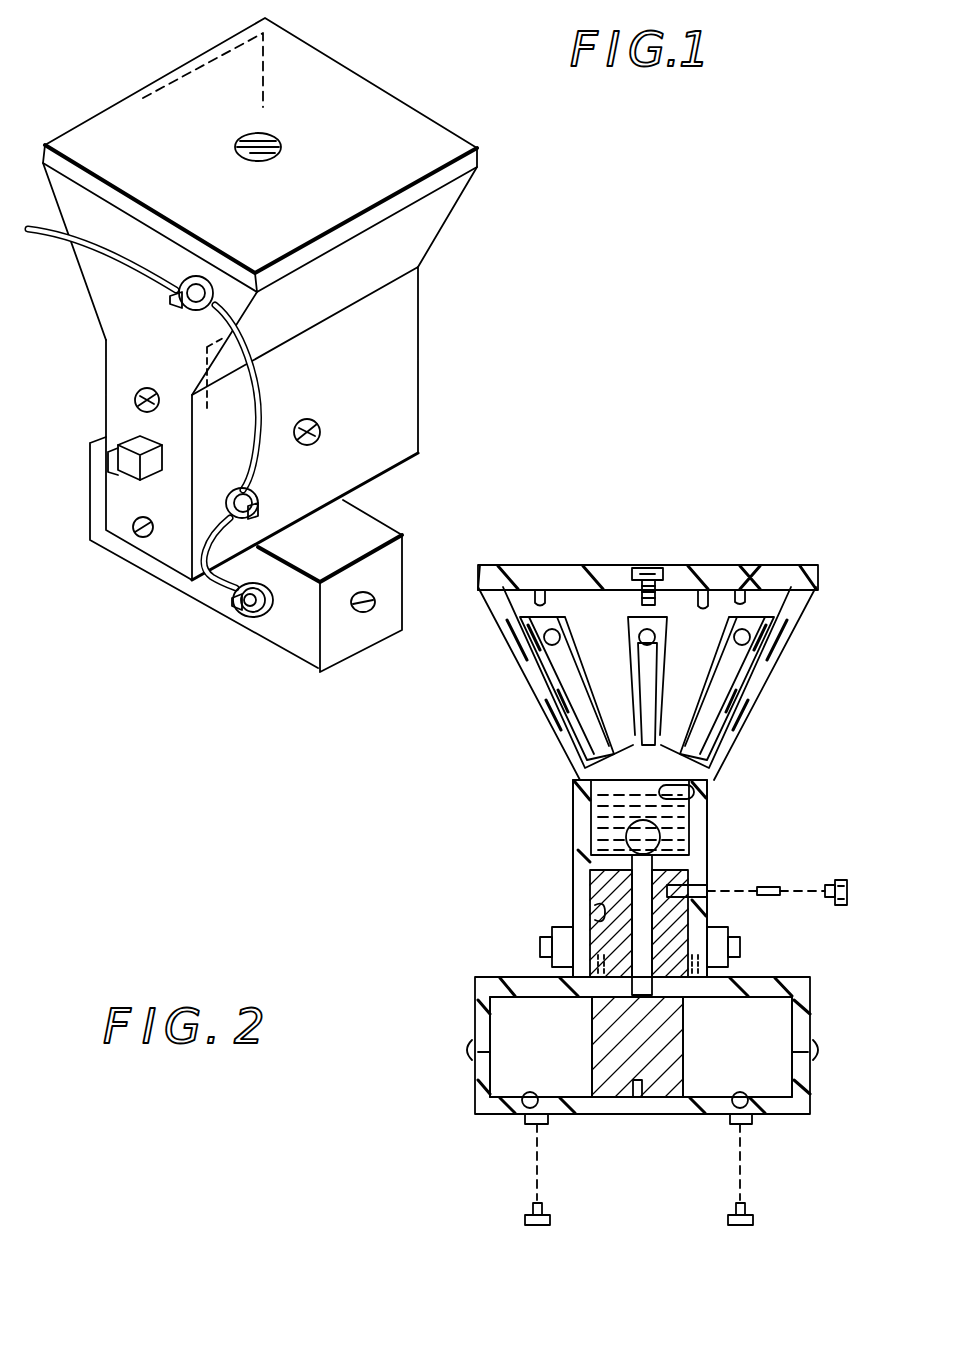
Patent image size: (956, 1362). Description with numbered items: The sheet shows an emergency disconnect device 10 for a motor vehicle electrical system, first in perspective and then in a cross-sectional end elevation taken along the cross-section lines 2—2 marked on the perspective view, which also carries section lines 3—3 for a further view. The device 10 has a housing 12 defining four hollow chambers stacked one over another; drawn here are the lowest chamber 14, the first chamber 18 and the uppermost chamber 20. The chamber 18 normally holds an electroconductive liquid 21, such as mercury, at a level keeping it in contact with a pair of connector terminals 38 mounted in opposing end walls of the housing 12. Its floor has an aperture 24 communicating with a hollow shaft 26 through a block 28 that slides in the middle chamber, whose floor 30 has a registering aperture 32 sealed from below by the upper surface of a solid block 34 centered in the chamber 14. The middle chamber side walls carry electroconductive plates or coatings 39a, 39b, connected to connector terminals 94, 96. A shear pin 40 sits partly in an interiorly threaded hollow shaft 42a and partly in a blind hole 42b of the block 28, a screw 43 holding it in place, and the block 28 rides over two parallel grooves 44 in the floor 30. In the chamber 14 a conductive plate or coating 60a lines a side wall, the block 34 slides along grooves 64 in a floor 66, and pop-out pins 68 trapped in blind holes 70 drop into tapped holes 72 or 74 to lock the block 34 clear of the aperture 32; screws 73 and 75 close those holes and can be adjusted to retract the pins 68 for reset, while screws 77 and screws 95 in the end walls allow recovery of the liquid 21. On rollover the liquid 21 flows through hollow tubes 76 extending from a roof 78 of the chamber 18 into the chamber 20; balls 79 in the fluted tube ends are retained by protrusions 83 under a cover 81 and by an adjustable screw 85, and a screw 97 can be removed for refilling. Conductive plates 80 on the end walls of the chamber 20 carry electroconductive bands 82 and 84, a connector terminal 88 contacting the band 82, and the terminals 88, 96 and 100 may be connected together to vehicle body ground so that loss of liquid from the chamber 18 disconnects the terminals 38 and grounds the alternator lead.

In FIG. 1, the cross-section lines 2- 2 is at (115, 27).
In FIG. 1, the cross-section lines 3- 3 is at (145, 100).
In FIG. 1, the emergency disconnect device 10 is at (445, 333).
In FIG. 2, the emergency disconnect device 10 is at (693, 522).
In FIG. 1, the housing 12 is at (367, 530).
In FIG. 2, the housing 12 is at (540, 722).
In FIG. 2, the chamber 14 is at (772, 985).
In FIG. 2, the first chamber 18 is at (712, 780).
In FIG. 2, the chamber 20 is at (740, 600).
In FIG. 2, the electroconductive liquid 21 is at (576, 785).
In FIG. 2, the aperture 24 is at (625, 862).
In FIG. 2, the hollow shaft 26 is at (590, 882).
In FIG. 2, the block 28 is at (575, 892).
In FIG. 2, the floor 30 is at (700, 898).
In FIG. 2, the aperture 32 is at (590, 986).
In FIG. 2, the solid block 34 is at (685, 1060).
In FIG. 1, the electrical connector terminals 38 is at (125, 445).
In FIG. 2, the electrical connector terminals 38 is at (628, 830).
In FIG. 2, the electroconductive plate or coating 39a is at (715, 968).
In FIG. 2, the electroconductive plate or coating 39b is at (600, 918).
In FIG. 2, the shear pin 40 is at (768, 887).
In FIG. 2, the interiorly threaded hollow shaft 42a is at (710, 885).
In FIG. 2, the blind hole 42b is at (700, 803).
In FIG. 1, the screw 43 is at (322, 436).
In FIG. 2, the screw 43 is at (836, 880).
In FIG. 2, the grooves 44 is at (600, 968).
In FIG. 2, the electrically conductive plate or coating 60a is at (565, 1038).
In FIG. 2, the grooves 64 is at (600, 1085).
In FIG. 2, the floor 66 is at (755, 1124).
In FIG. 2, the pop-out pins 68 is at (640, 1100).
In FIG. 2, the blind holes 70 is at (600, 1060).
In FIG. 2, the tapped holes 72 is at (730, 1118).
In FIG. 2, the screws 73 is at (732, 1212).
In FIG. 2, the tapped holes 74 is at (522, 1118).
In FIG. 2, the screws 75 is at (528, 1212).
In FIG. 2, the hollow tubes 76 is at (565, 652).
In FIG. 1, the screws 77 is at (376, 601).
In FIG. 2, the screws 77 is at (810, 1045).
In FIG. 2, the roof 78 is at (663, 722).
In FIG. 2, the ball 79 is at (573, 589).
In FIG. 2, the electrically conductive coatings or plates 80 is at (711, 643).
In FIG. 1, the cover 81 is at (478, 163).
In FIG. 2, the cover 81 is at (711, 590).
In FIG. 2, the electroconductive strip or band 82 is at (800, 580).
In FIG. 2, the protrusions 83 is at (760, 590).
In FIG. 2, the electroconductive strip or band 84 is at (768, 665).
In FIG. 1, the adjustable screw 85 is at (282, 152).
In FIG. 2, the adjustable screw 85 is at (656, 568).
In FIG. 1, the connector terminal 88 is at (185, 305).
In FIG. 2, the connector terminal 94 is at (737, 950).
In FIG. 1, the screws 95 is at (140, 537).
In FIG. 1, the connector terminal 96 is at (256, 503).
In FIG. 2, the connector terminal 96 is at (550, 938).
In FIG. 1, the screw 97 is at (136, 393).
In FIG. 1, the connector terminal 100 is at (245, 608).